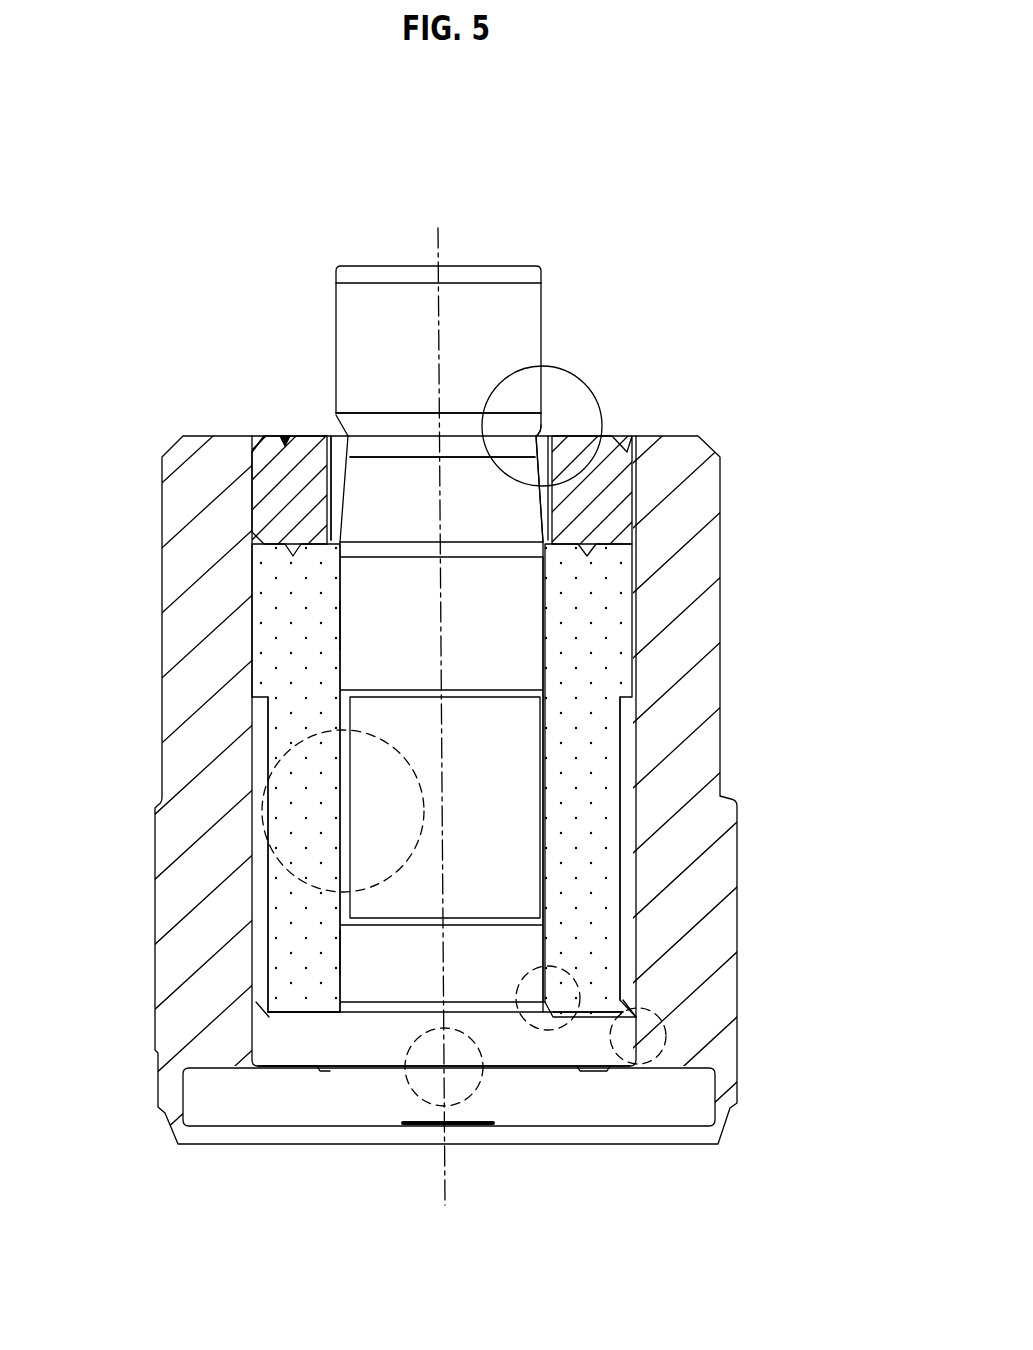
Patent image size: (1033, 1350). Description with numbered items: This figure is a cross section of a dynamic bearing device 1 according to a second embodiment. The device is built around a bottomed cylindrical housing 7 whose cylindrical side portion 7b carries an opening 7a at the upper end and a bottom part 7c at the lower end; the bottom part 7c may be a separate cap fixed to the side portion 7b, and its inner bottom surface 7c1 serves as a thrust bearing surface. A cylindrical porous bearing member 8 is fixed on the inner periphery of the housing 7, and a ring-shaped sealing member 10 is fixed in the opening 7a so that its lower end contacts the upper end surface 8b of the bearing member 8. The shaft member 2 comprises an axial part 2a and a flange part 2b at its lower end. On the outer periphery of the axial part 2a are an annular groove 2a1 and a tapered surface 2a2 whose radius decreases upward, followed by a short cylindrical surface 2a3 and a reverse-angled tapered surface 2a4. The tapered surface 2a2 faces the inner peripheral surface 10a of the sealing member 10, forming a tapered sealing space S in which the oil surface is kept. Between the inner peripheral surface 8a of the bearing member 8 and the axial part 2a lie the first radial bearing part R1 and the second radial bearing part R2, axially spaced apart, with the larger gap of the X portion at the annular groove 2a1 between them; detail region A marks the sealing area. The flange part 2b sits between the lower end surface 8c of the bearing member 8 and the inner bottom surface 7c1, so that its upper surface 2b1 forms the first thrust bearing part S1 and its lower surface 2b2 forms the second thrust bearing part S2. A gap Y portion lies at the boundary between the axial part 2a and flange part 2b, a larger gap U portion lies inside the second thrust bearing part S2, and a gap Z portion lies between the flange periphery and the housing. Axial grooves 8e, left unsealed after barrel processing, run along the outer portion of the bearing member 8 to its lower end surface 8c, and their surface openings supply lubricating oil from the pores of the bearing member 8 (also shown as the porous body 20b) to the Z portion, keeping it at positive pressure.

The dynamic bearing device 1 is at (693, 330).
The shaft member 2 is at (545, 292).
The axial part 2a is at (474, 296).
The annular groove 2a1 is at (508, 758).
The tapered surface 2a2 is at (655, 433).
The cylindrical surface 2a3 is at (387, 448).
The tapered surface 2a4 is at (412, 420).
The flange part 2b is at (655, 1047).
The upper surface of the flange part 2b1 is at (630, 1015).
The lower surface of the flange part 2b2 is at (612, 1069).
The housing 7 is at (722, 455).
The opening 7a is at (253, 436).
The side portion 7b is at (722, 862).
The bottom part 7c is at (574, 1110).
The inner bottom surface 7c1 is at (357, 1040).
The bearing member 8 is at (632, 633).
The inner peripheral surface 8a is at (538, 637).
The upper end surface 8b is at (318, 535).
The lower end surface 8c is at (313, 1017).
The axial grooves 8e is at (263, 885).
The sealing member 10 is at (623, 515).
The inner peripheral surface of the sealing member 10a is at (542, 430).
The packing body 20b is at (272, 548).
The detail region A is at (572, 367).
The sealing space S is at (340, 453).
The first thrust bearing part S1 is at (323, 1067).
The second thrust bearing part S2 is at (370, 1043).
The first radial bearing part R1 is at (347, 623).
The second radial bearing part R2 is at (352, 951).
The X portion X is at (268, 763).
The Y portion Y is at (566, 970).
The Z portion Z is at (665, 1050).
The U portion U is at (465, 1100).